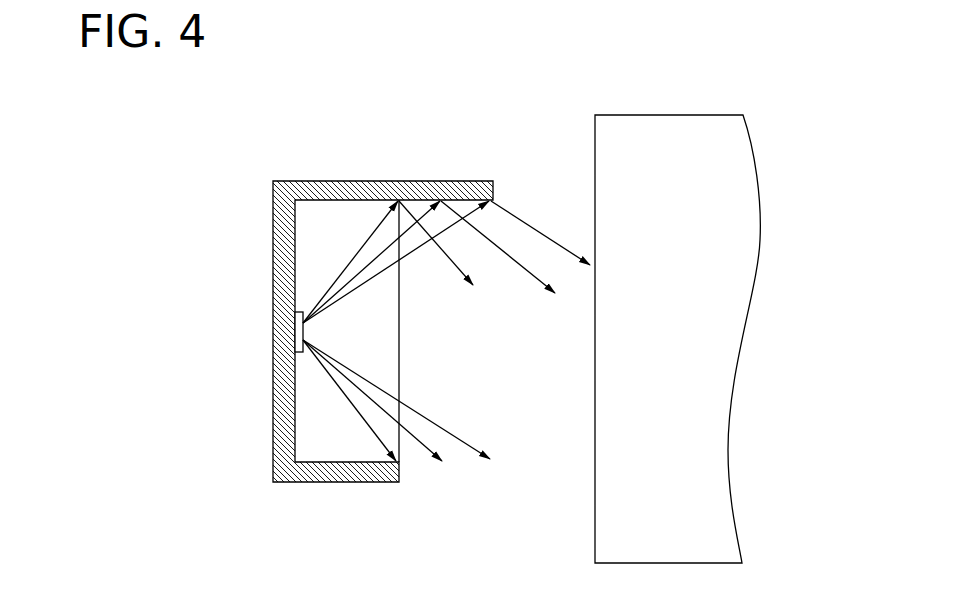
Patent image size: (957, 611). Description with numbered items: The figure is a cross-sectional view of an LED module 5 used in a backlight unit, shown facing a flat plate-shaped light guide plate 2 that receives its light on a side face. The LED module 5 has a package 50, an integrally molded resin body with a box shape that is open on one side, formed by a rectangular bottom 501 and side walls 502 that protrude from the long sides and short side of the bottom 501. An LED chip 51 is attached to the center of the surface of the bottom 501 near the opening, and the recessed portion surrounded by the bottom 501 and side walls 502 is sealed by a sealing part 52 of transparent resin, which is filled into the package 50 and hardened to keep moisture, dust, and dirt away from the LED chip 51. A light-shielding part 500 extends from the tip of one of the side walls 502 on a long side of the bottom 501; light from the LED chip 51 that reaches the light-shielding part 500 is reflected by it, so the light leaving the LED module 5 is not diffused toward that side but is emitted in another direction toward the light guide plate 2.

The light guide plate 2 is at (730, 152).
The LED module 5 is at (303, 160).
The package 50 is at (495, 193).
The light-shielding part 500 is at (443, 189).
The bottom 501 is at (284, 410).
The side walls 502 is at (350, 186).
The LED chip 51 is at (298, 333).
The sealing part 52 is at (305, 450).